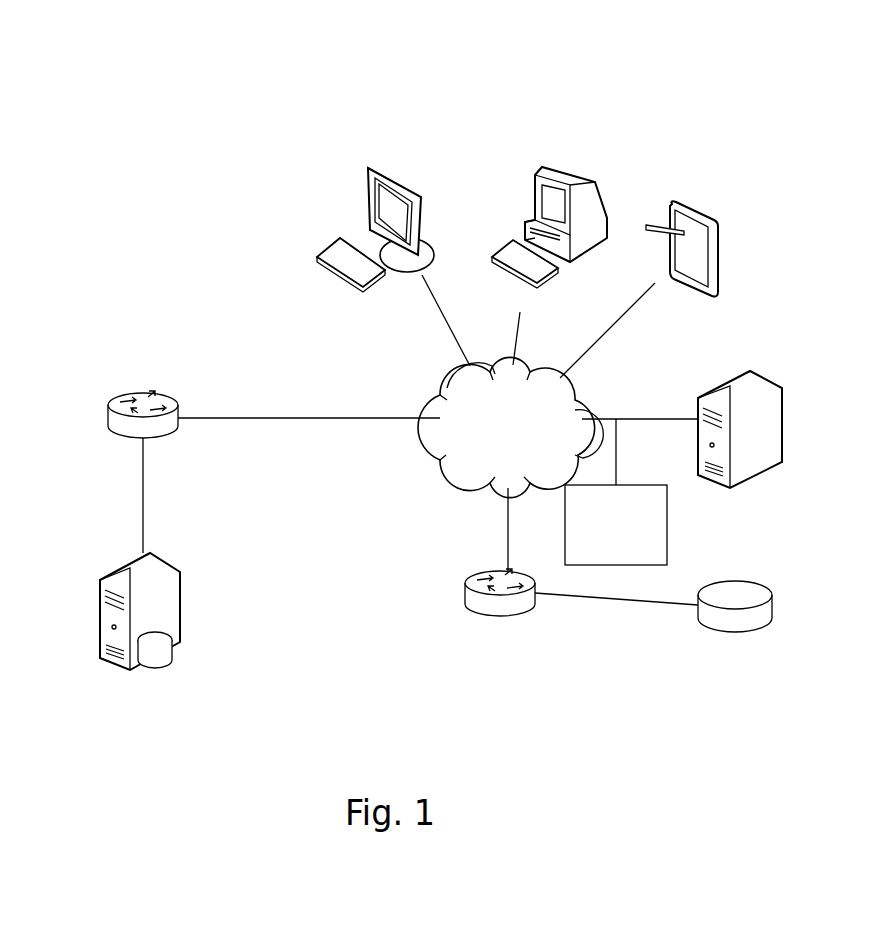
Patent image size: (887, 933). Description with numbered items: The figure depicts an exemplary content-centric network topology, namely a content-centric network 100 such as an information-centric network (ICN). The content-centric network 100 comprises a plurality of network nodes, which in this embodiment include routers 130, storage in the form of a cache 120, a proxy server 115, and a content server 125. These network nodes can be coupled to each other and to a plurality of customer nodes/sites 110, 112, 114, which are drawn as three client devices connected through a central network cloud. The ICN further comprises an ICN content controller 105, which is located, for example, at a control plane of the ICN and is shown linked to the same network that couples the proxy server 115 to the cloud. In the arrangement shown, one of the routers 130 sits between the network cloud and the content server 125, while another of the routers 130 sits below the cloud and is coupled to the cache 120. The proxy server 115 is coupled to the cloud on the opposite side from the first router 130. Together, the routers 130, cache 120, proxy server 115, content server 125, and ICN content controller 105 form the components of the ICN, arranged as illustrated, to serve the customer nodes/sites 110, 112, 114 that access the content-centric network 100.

The content-centric network 100 is at (74, 62).
The ICN content controller 105 is at (666, 548).
The customer node/site 110 is at (368, 185).
The customer node/site 112 is at (538, 192).
The customer node/site 114 is at (719, 232).
The proxy server 115 is at (730, 392).
The storage (cache) 120 is at (703, 628).
The content server 125 is at (120, 576).
The router 130 is at (118, 428).